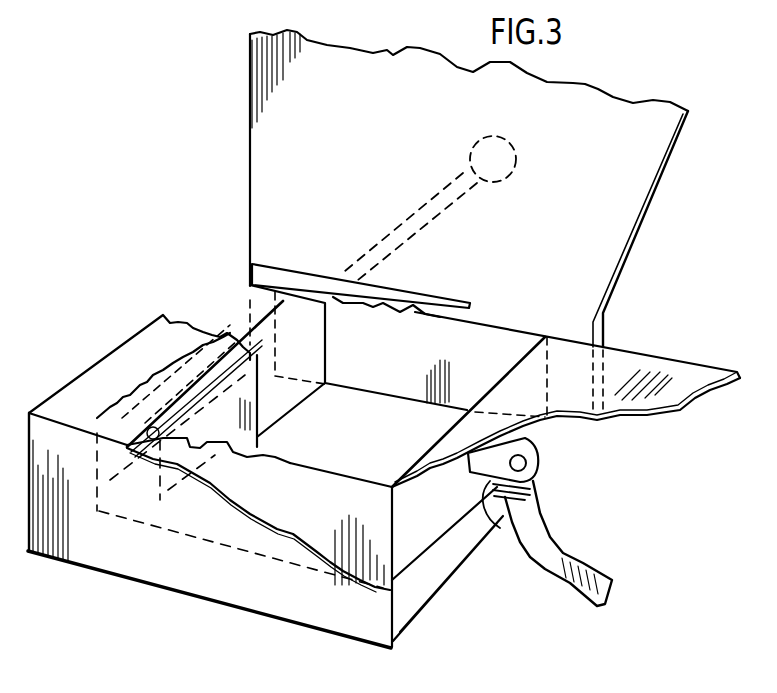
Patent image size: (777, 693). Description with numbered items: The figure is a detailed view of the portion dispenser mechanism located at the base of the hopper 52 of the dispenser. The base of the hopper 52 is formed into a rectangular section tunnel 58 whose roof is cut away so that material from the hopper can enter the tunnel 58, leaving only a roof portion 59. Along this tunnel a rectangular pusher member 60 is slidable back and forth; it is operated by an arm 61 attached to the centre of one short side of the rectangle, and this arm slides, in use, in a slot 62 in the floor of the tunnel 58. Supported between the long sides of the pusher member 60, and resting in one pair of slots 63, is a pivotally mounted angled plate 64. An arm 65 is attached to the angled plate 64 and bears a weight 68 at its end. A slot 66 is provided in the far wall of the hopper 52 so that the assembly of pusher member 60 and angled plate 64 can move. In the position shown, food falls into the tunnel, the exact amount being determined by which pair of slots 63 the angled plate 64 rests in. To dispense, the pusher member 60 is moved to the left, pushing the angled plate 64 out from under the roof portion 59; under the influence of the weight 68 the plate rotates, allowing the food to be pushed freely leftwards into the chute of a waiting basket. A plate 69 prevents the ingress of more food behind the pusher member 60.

The hopper 52 is at (364, 126).
The tunnel 58 is at (418, 584).
The roof portion 59 is at (98, 380).
The rectangular pusher member 60 is at (440, 528).
The arm 61 is at (533, 527).
The slot 62 is at (509, 511).
The slots 63 is at (362, 312).
The angled plate 64 is at (262, 408).
The arm 65 is at (452, 190).
The slot 66 is at (300, 272).
The weight 68 is at (518, 159).
The plate 69 is at (697, 372).